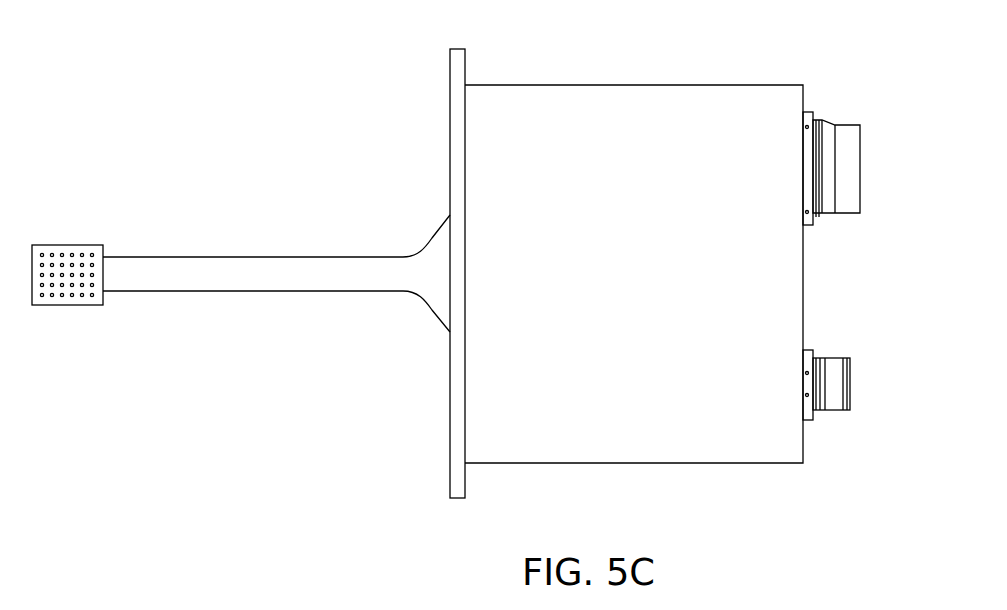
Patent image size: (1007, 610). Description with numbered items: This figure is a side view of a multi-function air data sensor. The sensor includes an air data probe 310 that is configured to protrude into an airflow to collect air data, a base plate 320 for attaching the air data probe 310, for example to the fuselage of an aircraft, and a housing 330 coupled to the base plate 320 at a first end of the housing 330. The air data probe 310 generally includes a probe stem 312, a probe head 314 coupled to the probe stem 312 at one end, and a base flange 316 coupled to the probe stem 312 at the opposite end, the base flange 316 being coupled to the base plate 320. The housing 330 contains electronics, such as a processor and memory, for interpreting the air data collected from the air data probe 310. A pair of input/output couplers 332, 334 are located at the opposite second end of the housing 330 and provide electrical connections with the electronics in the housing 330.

The air data probe 310 is at (241, 279).
The probe stem 312 is at (172, 256).
The probe head 314 is at (72, 254).
The base flange 316 is at (435, 233).
The base plate 320 is at (449, 79).
The housing 330 is at (655, 102).
The input/output coupler 332 is at (855, 172).
The input/output coupler 334 is at (852, 387).